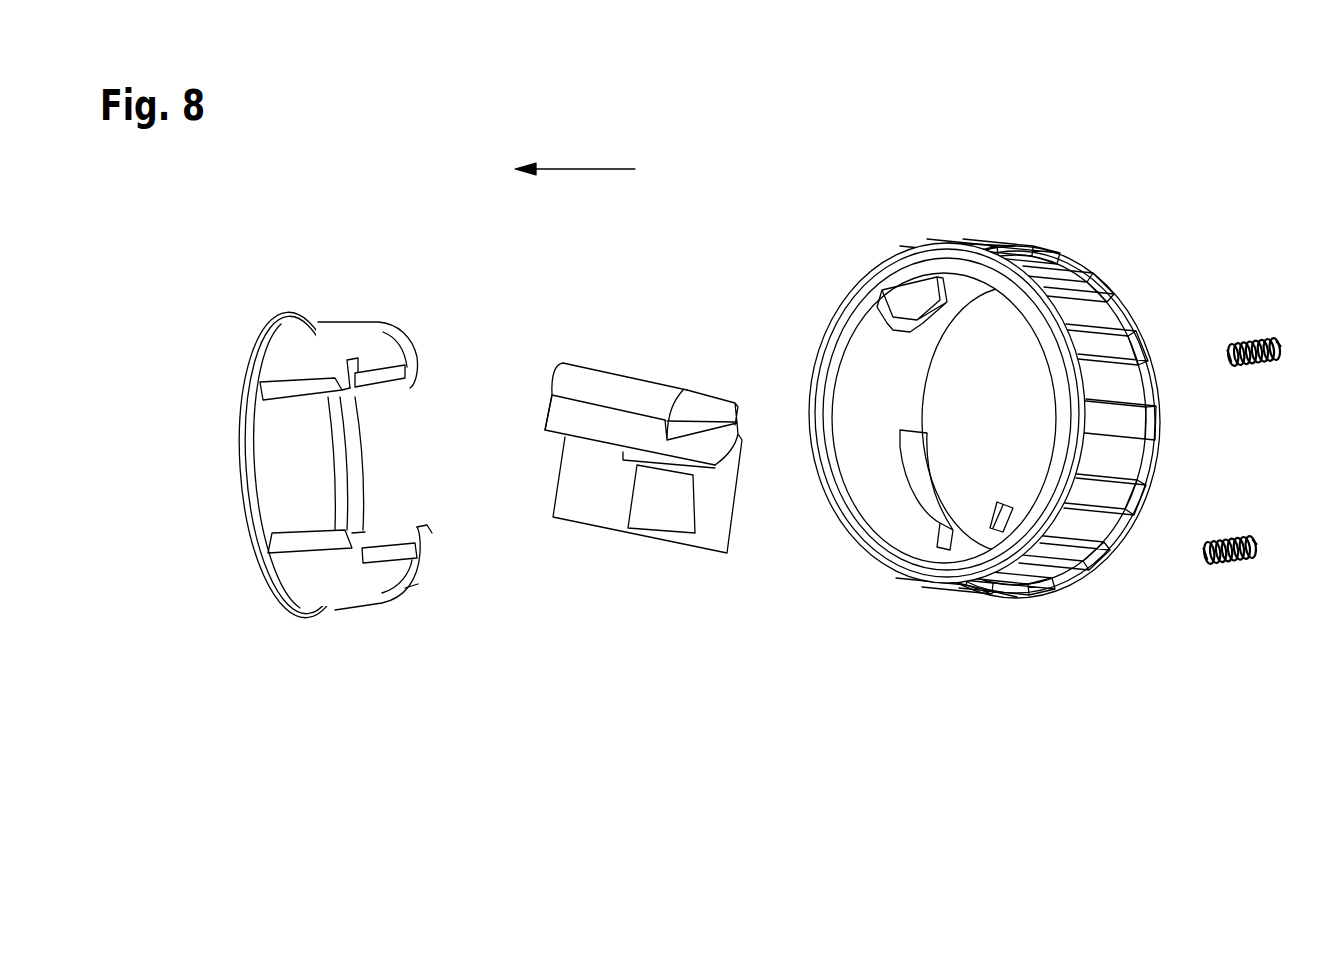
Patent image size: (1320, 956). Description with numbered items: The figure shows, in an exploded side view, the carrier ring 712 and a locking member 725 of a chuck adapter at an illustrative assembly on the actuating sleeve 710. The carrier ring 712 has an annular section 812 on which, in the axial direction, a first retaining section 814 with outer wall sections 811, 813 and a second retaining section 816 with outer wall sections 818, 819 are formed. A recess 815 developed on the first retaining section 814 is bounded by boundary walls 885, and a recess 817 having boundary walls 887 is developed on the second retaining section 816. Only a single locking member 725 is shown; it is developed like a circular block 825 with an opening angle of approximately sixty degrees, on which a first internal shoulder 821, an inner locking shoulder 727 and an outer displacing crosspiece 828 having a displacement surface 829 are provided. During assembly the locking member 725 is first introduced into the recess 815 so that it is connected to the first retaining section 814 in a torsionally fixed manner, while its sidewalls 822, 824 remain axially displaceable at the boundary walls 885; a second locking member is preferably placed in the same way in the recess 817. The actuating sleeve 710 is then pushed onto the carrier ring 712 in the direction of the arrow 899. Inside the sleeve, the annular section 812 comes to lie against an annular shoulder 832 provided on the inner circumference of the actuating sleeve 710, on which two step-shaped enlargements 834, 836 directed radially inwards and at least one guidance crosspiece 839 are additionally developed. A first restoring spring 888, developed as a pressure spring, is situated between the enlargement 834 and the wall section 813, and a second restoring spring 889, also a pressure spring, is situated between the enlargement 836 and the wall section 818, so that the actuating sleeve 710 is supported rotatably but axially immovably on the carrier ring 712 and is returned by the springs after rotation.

The actuating sleeve 710 is at (990, 396).
The carrier ring 712 is at (329, 429).
The locking member 725 is at (653, 433).
The inner locking shoulder 727 is at (691, 513).
The outer wall section 811 is at (294, 392).
The annular section 812 is at (247, 480).
The outer wall section 813 is at (383, 368).
The first retaining section 814 is at (333, 324).
The recess 815 is at (380, 352).
The second retaining section 816 is at (352, 602).
The recess 817 is at (389, 575).
The outer wall section 818 is at (298, 537).
The outer wall section 819 is at (428, 525).
The first internal shoulder 821 is at (603, 465).
The sidewall 822 is at (558, 415).
The sidewall 824 is at (617, 535).
The circular block 825 is at (630, 395).
The outer displacing crosspiece 828 is at (713, 405).
The displacement surface 829 is at (740, 409).
The annular shoulder 832 is at (853, 518).
The step-shaped enlargement 834 is at (905, 303).
The step-shaped enlargement 836 is at (990, 505).
The guidance crosspiece 839 is at (940, 457).
The boundary walls 885 is at (378, 392).
The boundary walls 887 is at (391, 527).
The first restoring spring 888 is at (1254, 364).
The second restoring spring 889 is at (1236, 538).
The arrow 899 is at (578, 169).